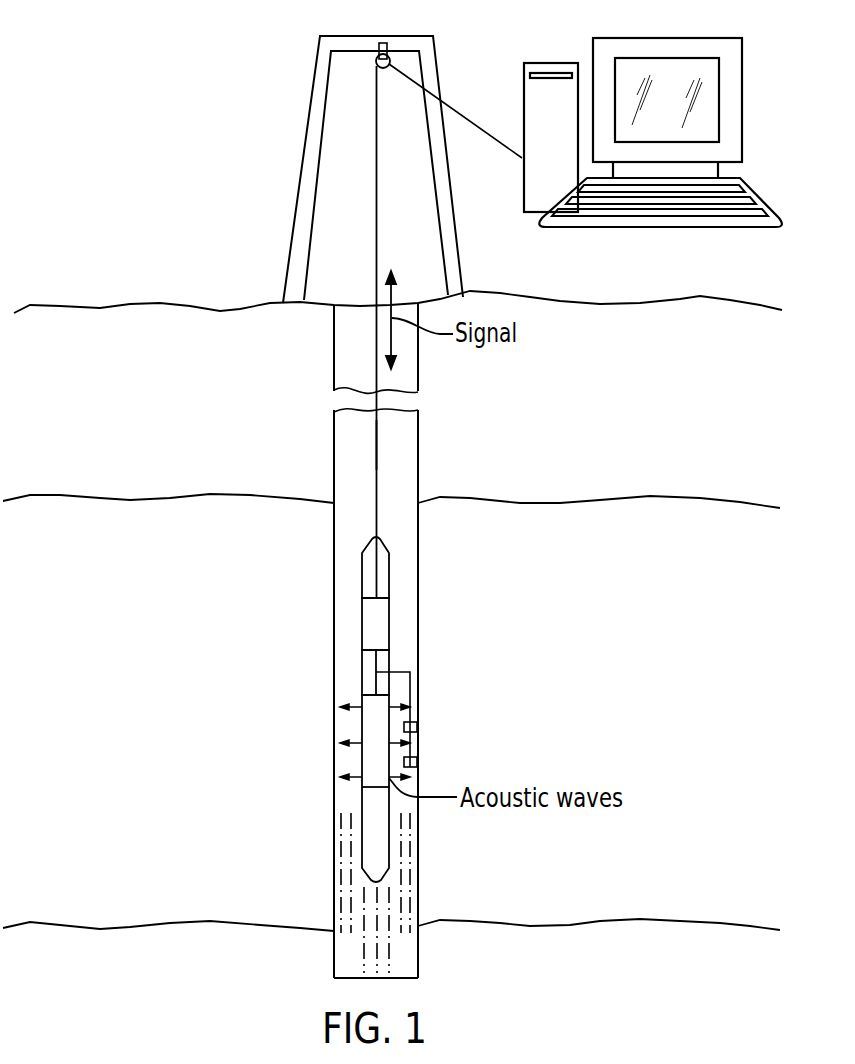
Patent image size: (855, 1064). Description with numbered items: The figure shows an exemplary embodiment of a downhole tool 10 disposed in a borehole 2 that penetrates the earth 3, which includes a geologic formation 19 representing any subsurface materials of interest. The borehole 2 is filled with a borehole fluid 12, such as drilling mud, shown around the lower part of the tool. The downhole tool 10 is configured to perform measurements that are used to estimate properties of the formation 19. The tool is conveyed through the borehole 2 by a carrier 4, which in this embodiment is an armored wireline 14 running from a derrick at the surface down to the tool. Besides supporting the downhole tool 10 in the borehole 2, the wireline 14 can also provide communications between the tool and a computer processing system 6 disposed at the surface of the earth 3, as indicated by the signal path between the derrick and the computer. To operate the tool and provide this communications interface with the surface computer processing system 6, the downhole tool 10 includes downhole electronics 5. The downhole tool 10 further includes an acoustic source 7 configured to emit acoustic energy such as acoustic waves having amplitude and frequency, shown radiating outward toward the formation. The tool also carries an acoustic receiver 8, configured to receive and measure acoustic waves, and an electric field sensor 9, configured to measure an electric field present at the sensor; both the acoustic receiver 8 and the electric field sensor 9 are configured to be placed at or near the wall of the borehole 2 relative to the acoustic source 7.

The borehole 2 is at (334, 320).
The earth 3 is at (694, 397).
The carrier 4 is at (376, 448).
The downhole electronics 5 is at (370, 622).
The computer processing system 6 is at (524, 105).
The acoustic source 7 is at (370, 728).
The acoustic receiver 8 is at (412, 727).
The electric field sensor 9 is at (412, 760).
The downhole tool 10 is at (362, 578).
The borehole fluid 12 is at (350, 888).
The armored wireline 14 is at (376, 355).
The geologic formation 19 is at (692, 688).